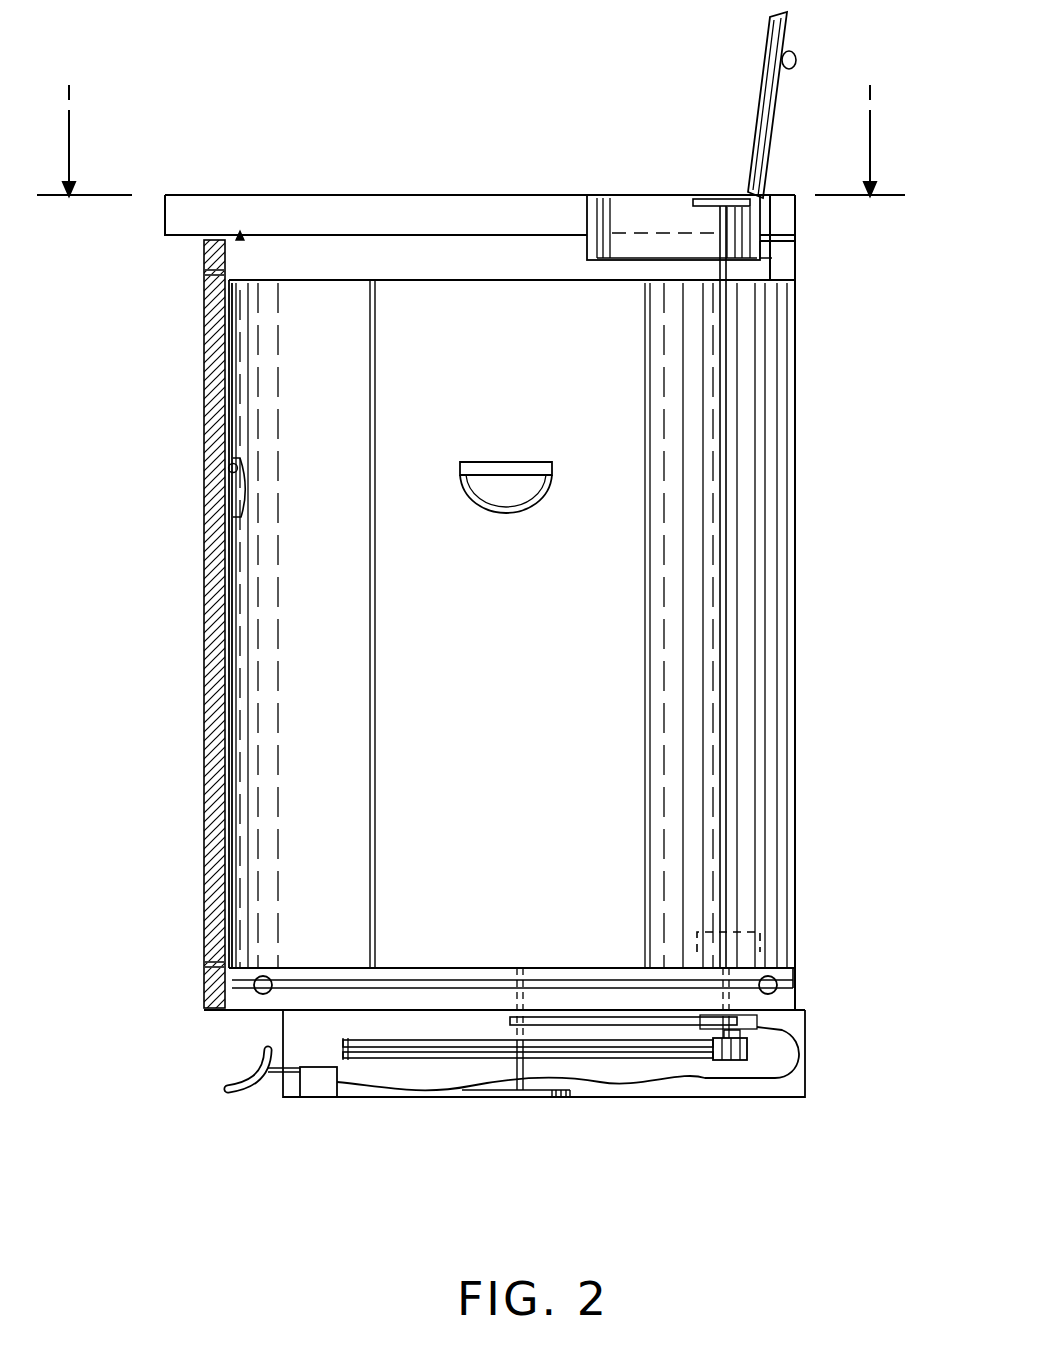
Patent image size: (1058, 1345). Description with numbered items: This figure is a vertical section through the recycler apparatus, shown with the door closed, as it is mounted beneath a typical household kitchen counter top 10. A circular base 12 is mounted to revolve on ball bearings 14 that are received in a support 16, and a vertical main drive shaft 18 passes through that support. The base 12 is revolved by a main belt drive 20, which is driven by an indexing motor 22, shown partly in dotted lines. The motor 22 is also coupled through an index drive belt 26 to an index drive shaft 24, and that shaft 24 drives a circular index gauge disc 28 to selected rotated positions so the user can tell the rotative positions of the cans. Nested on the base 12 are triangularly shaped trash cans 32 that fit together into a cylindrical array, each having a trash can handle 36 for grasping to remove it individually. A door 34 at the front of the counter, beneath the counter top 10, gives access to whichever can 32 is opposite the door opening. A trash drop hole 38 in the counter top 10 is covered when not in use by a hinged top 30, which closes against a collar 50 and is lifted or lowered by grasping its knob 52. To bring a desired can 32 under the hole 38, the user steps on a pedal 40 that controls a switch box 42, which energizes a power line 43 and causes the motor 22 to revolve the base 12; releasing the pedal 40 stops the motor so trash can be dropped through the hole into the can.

The counter top 10 is at (290, 195).
The circular base 12 is at (352, 975).
The ball bearings 14 is at (782, 988).
The support 16 is at (420, 995).
The main drive shaft 18 is at (500, 1030).
The main belt drive 20 is at (710, 1058).
The indexing motor 22 is at (755, 941).
The index drive shaft 24 is at (735, 748).
The index drive belt 26 is at (605, 1022).
The index gauge disc 28 is at (708, 199).
The hinged top 30 is at (766, 86).
The trash cans 32 is at (526, 676).
The door 34 is at (208, 680).
The trash can handle 36 is at (222, 480).
The trash drop hole 38 is at (637, 218).
The pedal 40 is at (260, 1062).
The switch box 42 is at (310, 1097).
The power line 43 is at (598, 1097).
The collar 50 is at (770, 246).
The knob 52 is at (797, 62).